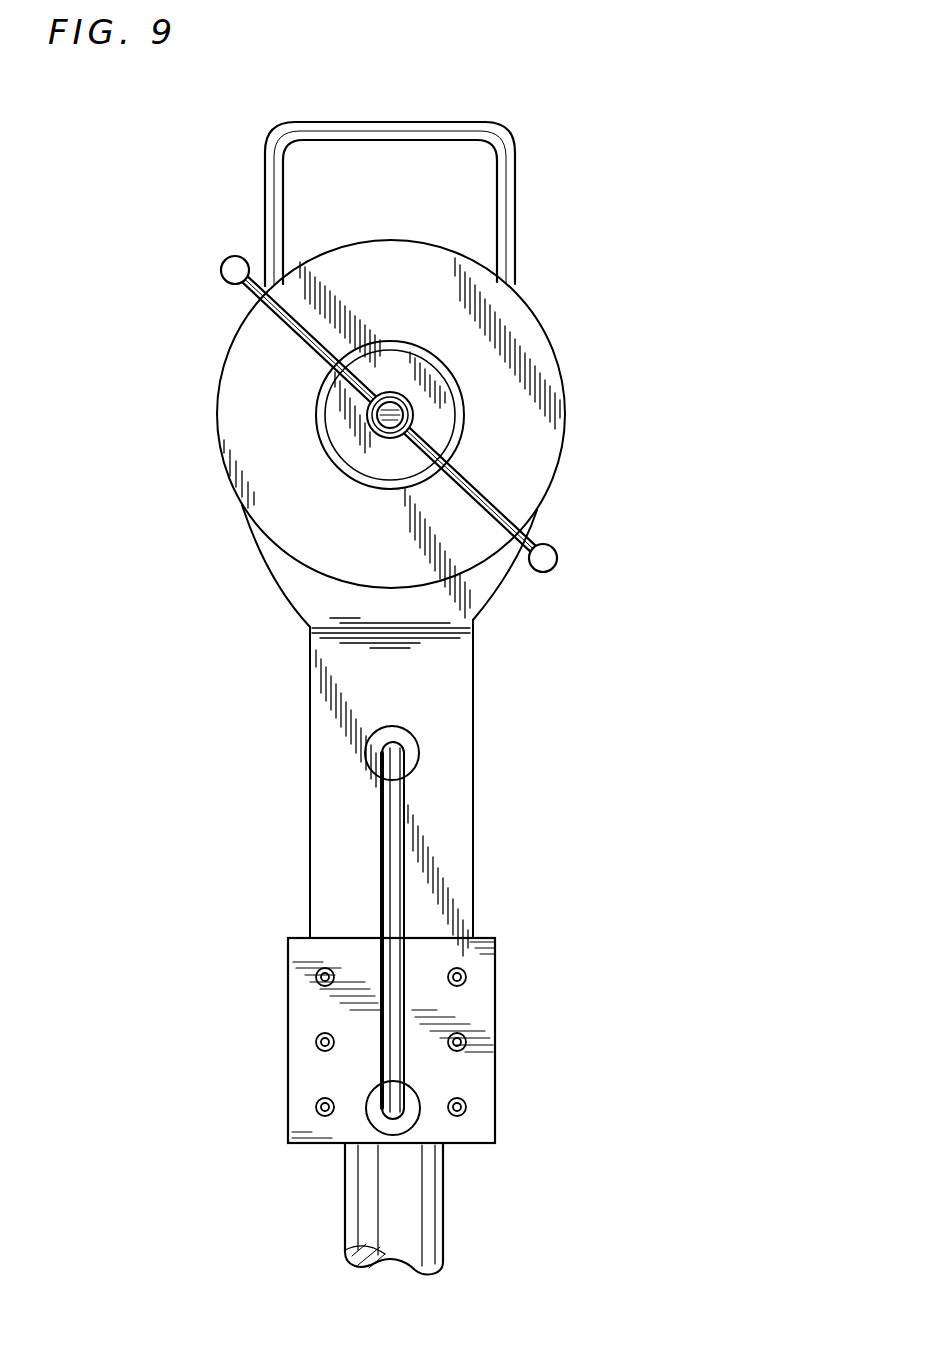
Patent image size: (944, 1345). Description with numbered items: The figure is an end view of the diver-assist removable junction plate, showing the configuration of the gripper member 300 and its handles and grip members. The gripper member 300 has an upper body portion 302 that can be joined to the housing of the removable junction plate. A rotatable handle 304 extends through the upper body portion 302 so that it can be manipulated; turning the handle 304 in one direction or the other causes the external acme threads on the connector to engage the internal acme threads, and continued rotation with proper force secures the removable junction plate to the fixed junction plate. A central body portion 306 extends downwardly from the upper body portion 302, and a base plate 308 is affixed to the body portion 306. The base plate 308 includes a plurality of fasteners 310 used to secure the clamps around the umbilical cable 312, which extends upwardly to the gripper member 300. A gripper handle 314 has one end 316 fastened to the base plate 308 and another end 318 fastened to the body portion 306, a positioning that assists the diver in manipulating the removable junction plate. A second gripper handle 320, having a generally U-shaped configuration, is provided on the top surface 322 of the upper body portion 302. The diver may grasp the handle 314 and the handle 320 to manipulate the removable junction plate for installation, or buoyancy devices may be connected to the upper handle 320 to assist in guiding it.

The gripper member 300 is at (487, 772).
The upper body portion 302 is at (535, 480).
The handle 304 is at (525, 528).
The central body portion 306 is at (460, 662).
The base plate 308 is at (492, 963).
The fasteners 310 is at (316, 1040).
The umbilical cable 312 is at (423, 1223).
The gripper handle 314 is at (380, 838).
The one end 316 is at (380, 1120).
The another end 318 is at (380, 755).
The second gripper handle 320 is at (510, 150).
The top surface 322 is at (345, 243).